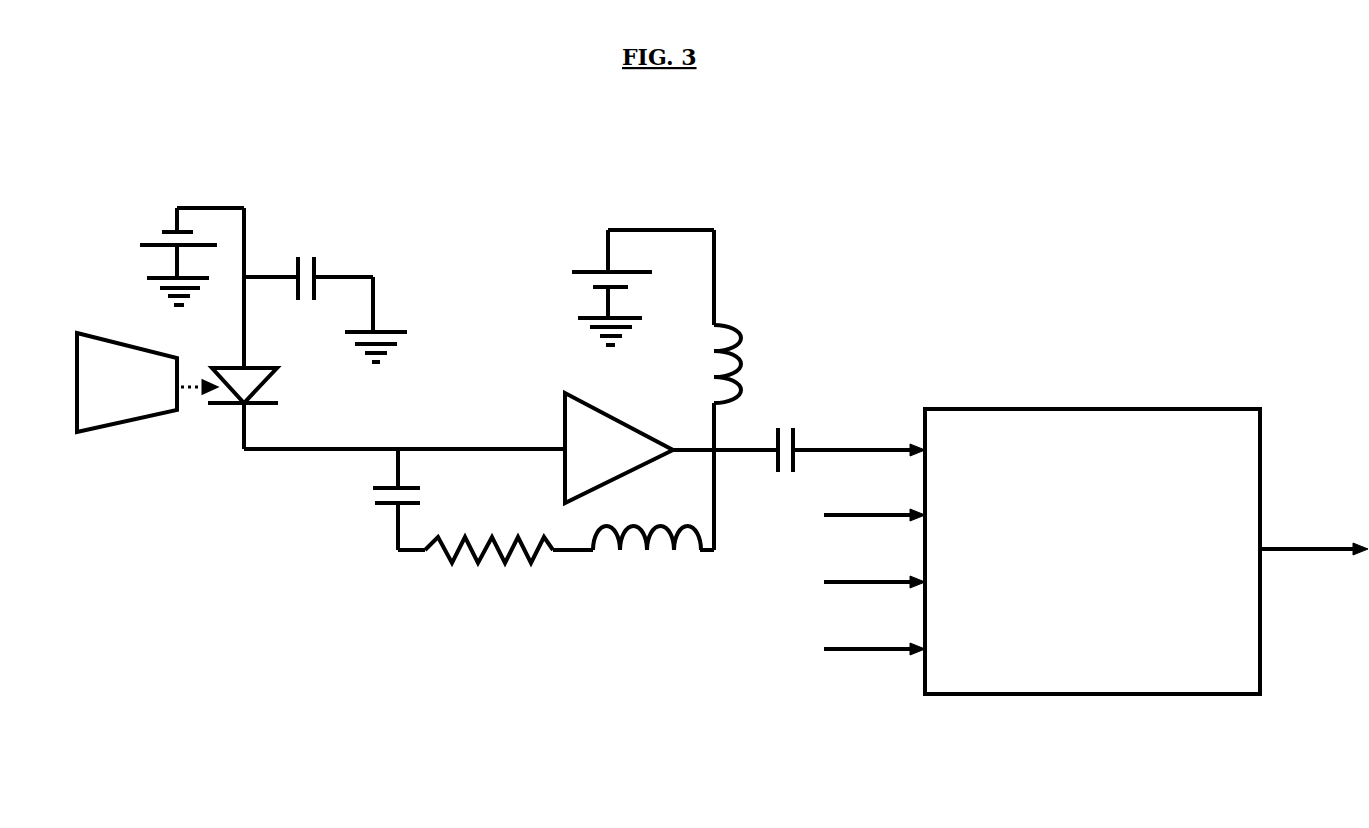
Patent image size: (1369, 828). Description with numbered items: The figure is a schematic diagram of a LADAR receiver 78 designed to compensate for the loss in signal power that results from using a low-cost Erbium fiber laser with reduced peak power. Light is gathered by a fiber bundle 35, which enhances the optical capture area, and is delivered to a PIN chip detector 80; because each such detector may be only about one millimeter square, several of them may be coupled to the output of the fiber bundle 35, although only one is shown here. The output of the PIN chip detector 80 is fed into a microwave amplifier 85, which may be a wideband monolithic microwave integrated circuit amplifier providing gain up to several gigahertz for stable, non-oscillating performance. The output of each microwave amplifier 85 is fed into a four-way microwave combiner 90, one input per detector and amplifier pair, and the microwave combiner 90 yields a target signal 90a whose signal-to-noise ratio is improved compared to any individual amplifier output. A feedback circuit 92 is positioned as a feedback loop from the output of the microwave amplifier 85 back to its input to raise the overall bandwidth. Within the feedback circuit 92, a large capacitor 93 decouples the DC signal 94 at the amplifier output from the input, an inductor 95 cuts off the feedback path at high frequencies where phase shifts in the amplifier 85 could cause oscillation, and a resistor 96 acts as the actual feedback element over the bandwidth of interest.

The fiber bundle 35 is at (80, 432).
The receiver 78 is at (903, 212).
The PIN chip detector 80 is at (222, 403).
The microwave amplifier 85 is at (563, 413).
The microwave combiner 90 is at (1042, 551).
The target signal 90a is at (1314, 537).
The feedback circuit 92 is at (568, 533).
The capacitor 93 is at (377, 505).
The DC signal 94 is at (714, 555).
The inductor 95 is at (594, 554).
The resistor 96 is at (432, 553).